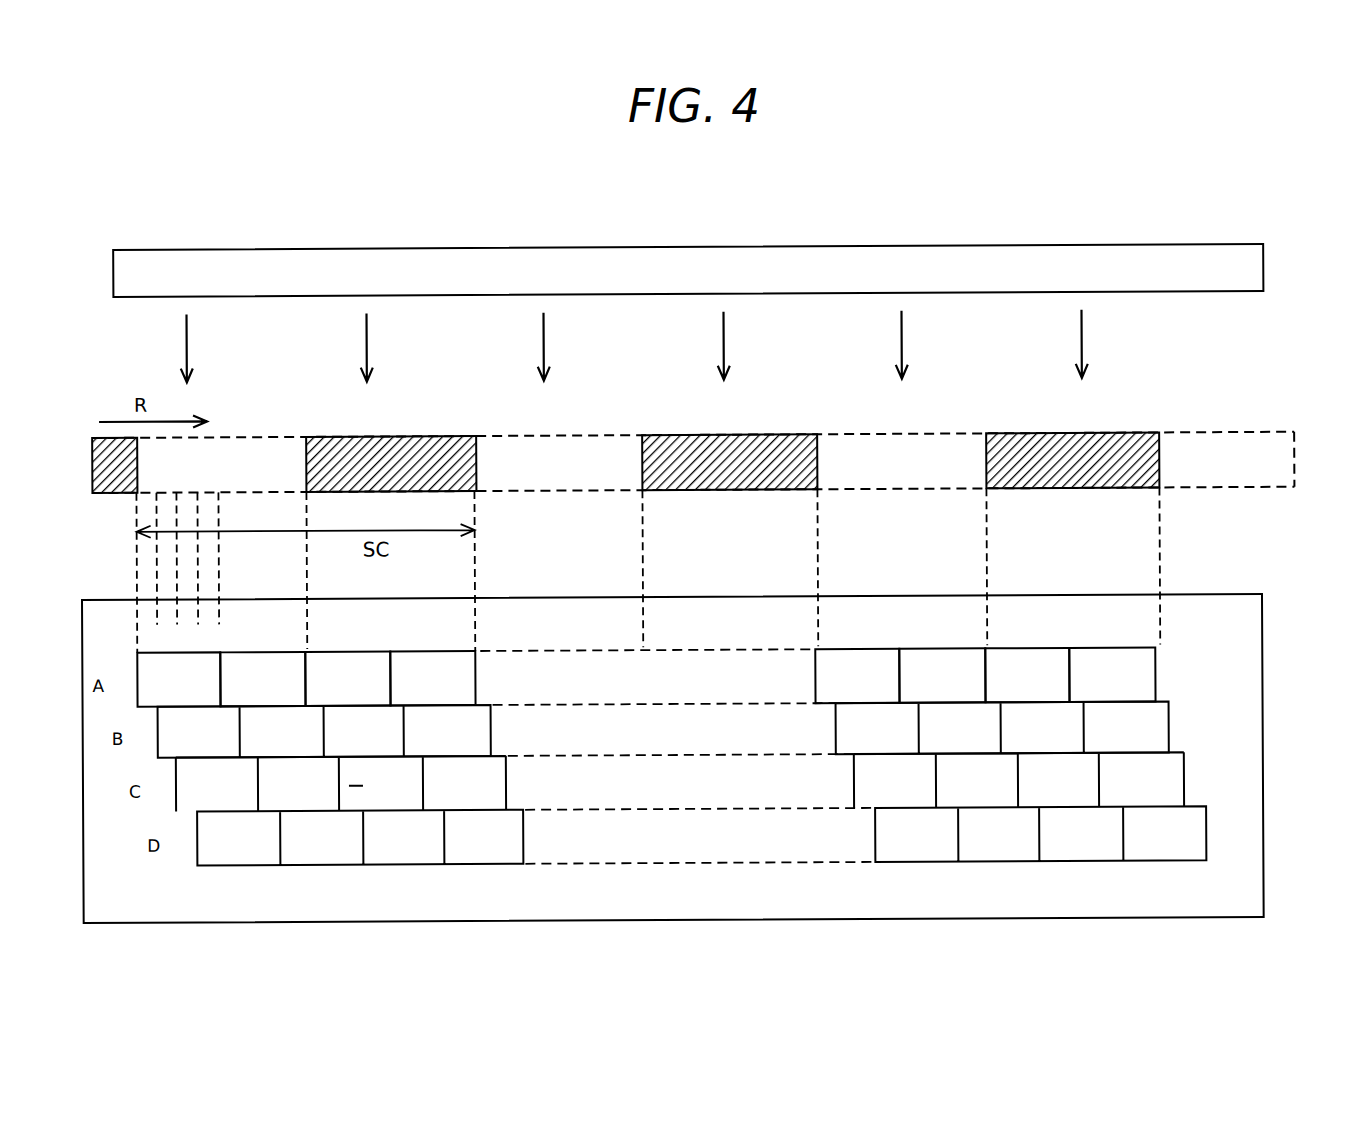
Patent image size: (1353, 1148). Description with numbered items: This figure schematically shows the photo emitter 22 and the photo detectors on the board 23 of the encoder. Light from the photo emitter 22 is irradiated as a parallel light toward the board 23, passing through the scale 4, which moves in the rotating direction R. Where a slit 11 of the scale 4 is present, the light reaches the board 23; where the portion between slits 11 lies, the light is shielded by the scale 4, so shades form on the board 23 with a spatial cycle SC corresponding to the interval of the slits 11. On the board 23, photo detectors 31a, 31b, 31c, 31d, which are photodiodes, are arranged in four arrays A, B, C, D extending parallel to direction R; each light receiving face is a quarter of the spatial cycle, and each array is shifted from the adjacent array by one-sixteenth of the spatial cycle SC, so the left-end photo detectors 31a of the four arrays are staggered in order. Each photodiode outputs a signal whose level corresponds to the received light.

The photo emitter 22 is at (764, 250).
The scale 4 is at (418, 438).
The slit 11 is at (252, 438).
The board 23 is at (1262, 695).
The photo detector 31a is at (203, 662).
The photo detector 31b is at (280, 662).
The photo detector 31c is at (360, 662).
The photo detector 31d is at (442, 662).